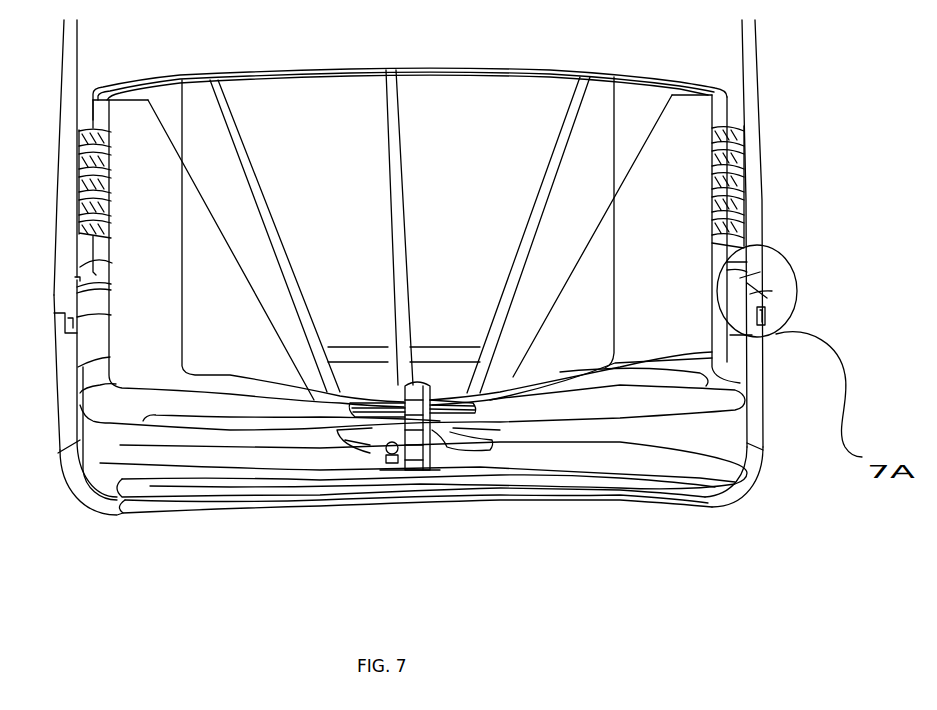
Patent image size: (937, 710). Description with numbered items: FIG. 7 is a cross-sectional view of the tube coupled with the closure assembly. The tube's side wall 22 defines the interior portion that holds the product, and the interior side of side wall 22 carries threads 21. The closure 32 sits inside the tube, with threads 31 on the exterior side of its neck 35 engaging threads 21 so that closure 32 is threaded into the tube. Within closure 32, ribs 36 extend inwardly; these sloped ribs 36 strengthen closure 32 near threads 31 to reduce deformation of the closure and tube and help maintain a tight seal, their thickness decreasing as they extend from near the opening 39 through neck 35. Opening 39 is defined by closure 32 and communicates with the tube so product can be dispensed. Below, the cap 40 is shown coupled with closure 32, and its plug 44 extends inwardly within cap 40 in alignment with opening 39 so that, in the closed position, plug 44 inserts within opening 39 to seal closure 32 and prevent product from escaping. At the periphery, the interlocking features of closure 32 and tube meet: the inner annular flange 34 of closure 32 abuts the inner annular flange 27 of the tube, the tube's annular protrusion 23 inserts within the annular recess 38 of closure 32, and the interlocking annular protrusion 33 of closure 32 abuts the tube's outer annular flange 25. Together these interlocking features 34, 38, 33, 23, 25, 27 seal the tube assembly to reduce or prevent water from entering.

The threads 21 is at (87, 150).
The side wall 22 is at (750, 101).
The annular protrusion 23 is at (745, 277).
The outer annular flange 25 is at (753, 294).
The inner annular flange 27 is at (78, 280).
The threads 31 is at (90, 128).
The closure 32 is at (62, 347).
The interlocking annular protrusion 33 is at (767, 317).
The inner annular flange 34 is at (75, 291).
The neck 35 is at (91, 117).
The ribs 36 is at (212, 140).
The annular recess 38 is at (760, 337).
The opening 39 is at (440, 447).
The cap 40 is at (85, 493).
The plug 44 is at (400, 417).